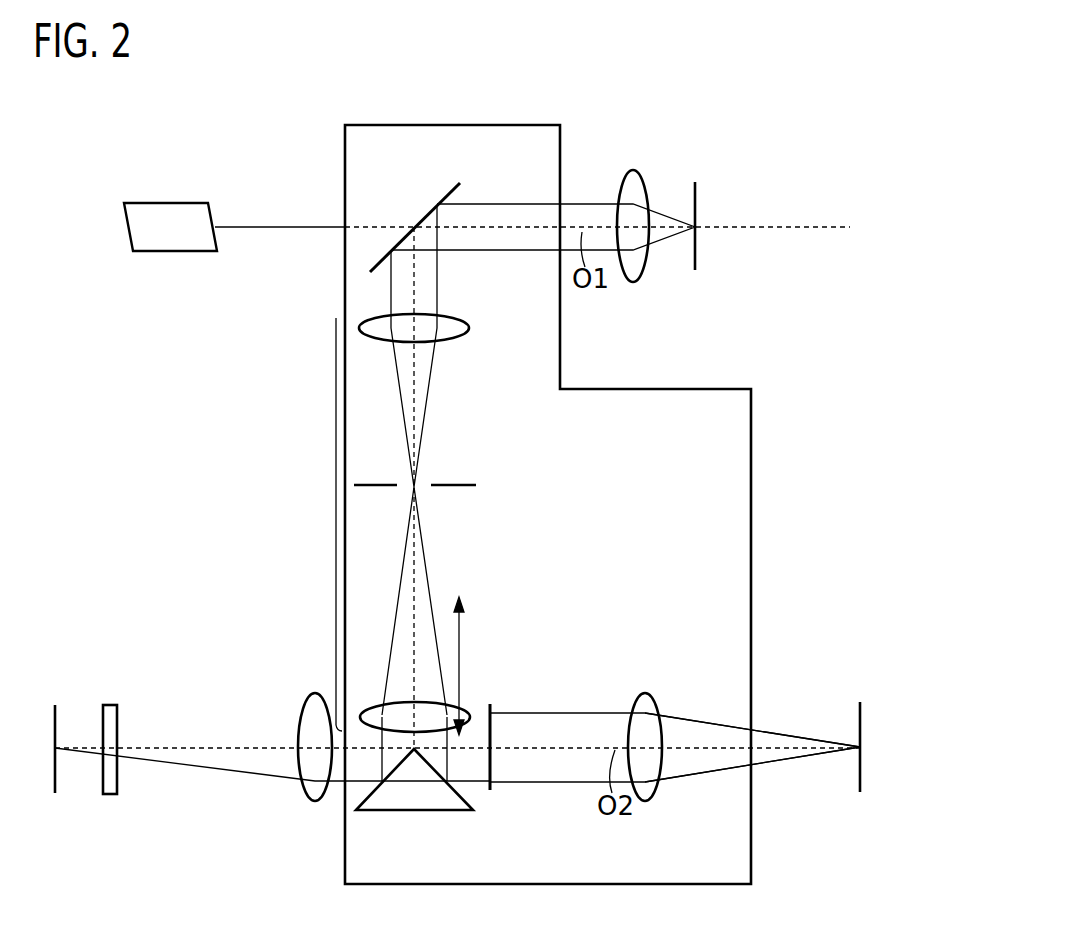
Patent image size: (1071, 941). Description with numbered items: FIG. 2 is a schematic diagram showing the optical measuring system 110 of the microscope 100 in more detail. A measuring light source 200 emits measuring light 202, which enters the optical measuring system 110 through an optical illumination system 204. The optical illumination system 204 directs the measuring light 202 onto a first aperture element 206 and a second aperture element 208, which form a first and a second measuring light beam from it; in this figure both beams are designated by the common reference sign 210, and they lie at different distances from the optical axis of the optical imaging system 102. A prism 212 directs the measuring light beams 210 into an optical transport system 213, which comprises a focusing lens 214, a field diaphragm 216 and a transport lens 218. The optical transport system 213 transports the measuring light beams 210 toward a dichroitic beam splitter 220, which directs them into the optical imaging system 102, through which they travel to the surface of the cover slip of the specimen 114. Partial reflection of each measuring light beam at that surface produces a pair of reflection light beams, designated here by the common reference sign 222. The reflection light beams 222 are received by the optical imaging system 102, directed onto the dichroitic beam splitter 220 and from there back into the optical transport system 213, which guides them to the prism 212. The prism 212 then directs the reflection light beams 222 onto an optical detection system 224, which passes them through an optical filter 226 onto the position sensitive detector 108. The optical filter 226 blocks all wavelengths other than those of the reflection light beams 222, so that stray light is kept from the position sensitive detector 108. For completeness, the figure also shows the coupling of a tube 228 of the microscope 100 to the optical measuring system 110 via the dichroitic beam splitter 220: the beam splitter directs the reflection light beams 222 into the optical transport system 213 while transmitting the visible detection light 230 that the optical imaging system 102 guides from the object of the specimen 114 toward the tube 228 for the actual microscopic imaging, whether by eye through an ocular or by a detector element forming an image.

The microscope 100 is at (198, 330).
The optical imaging system 102 is at (638, 171).
The position sensitive detector 108 is at (63, 703).
The optical measuring system 110 is at (751, 562).
The specimen 114 is at (698, 200).
The measuring light source 200 is at (862, 702).
The measuring light 202 is at (700, 716).
The optical illumination system 204 is at (645, 803).
The first aperture element 206 is at (492, 790).
The second aperture element 208 is at (533, 781).
The first and second measuring light beams 210 is at (527, 250).
The prism 212 is at (417, 812).
The optical transport system 213 is at (330, 521).
The focusing lens 214 is at (432, 713).
The field diaphragm 216 is at (478, 478).
The transport lens 218 is at (470, 325).
The dichroitic beam splitter 220 is at (423, 213).
The first and second reflection light beams 222 is at (523, 203).
The optical detection system 224 is at (316, 802).
The optical filter 226 is at (117, 703).
The tube 228 is at (168, 203).
The visible detection light 230 is at (271, 226).